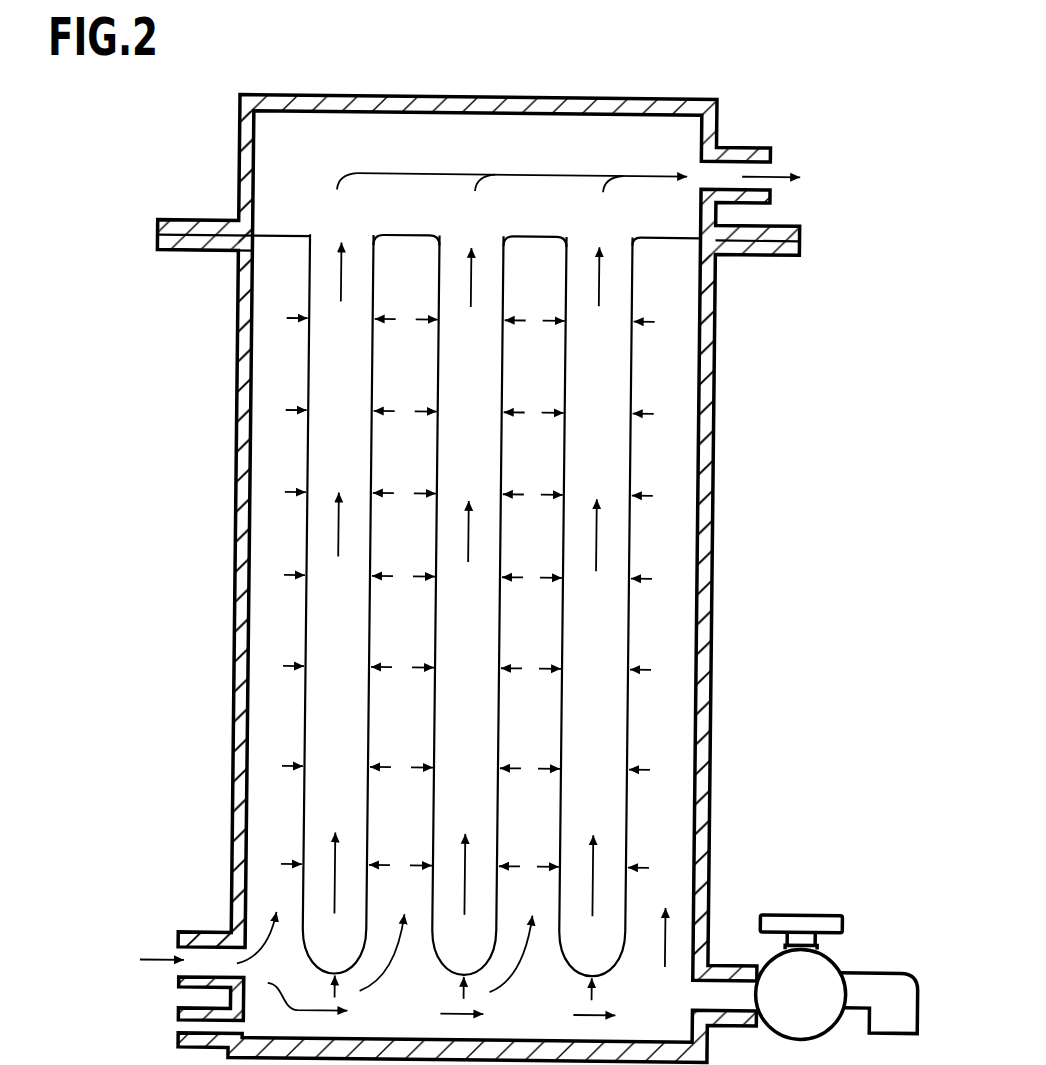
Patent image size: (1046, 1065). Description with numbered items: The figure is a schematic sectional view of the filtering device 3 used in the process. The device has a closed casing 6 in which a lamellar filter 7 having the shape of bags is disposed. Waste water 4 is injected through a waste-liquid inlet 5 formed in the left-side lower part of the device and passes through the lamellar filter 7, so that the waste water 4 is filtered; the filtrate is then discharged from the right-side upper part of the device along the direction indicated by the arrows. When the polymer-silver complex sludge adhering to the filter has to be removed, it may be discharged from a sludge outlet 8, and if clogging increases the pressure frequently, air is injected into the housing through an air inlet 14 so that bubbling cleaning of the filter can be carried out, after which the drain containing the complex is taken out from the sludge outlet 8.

The filtering device 3 is at (685, 84).
The waste water 4 is at (263, 590).
The waste-liquid inlet 5 is at (182, 936).
The closed casing 6 is at (235, 365).
The lamellar filter 7 is at (306, 459).
The sludge outlet 8 is at (896, 991).
The air inlet 14 is at (180, 1028).